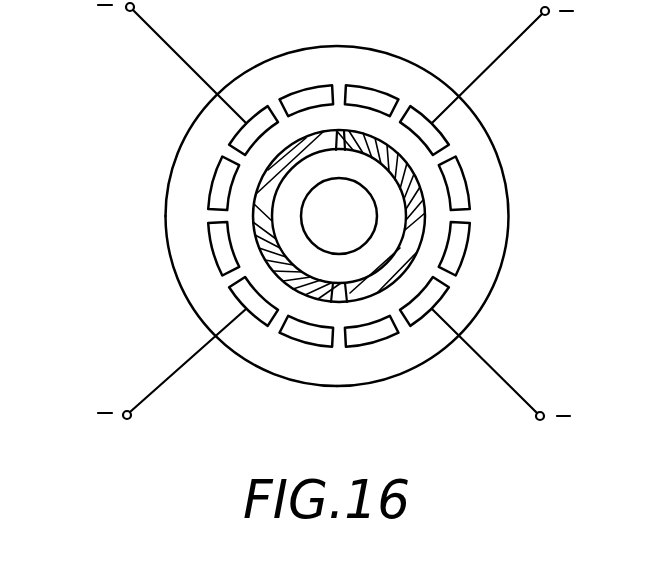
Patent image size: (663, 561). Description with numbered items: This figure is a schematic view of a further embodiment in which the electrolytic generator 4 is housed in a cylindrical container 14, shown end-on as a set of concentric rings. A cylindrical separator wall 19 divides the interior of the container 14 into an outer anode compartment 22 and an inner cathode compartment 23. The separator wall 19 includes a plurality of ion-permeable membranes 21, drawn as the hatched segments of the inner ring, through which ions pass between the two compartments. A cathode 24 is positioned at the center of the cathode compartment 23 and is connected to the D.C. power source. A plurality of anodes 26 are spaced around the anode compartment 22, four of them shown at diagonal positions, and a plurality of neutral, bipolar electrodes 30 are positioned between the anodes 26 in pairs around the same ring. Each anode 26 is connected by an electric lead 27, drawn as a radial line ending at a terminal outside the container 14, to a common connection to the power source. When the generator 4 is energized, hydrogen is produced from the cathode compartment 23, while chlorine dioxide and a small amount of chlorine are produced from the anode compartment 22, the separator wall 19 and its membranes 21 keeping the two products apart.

The electrolytic generator 4 is at (273, 245).
The container 14 is at (165, 193).
The separator wall 19 is at (335, 302).
The ion-permeable membrane 21 is at (280, 163).
The anode compartment 22 is at (265, 348).
The cathode compartment 23 is at (387, 198).
The cathode 24 is at (352, 226).
The anode 26 is at (247, 118).
The electric lead 27 is at (163, 40).
The neutral (bipolar) electrode 30 is at (370, 97).